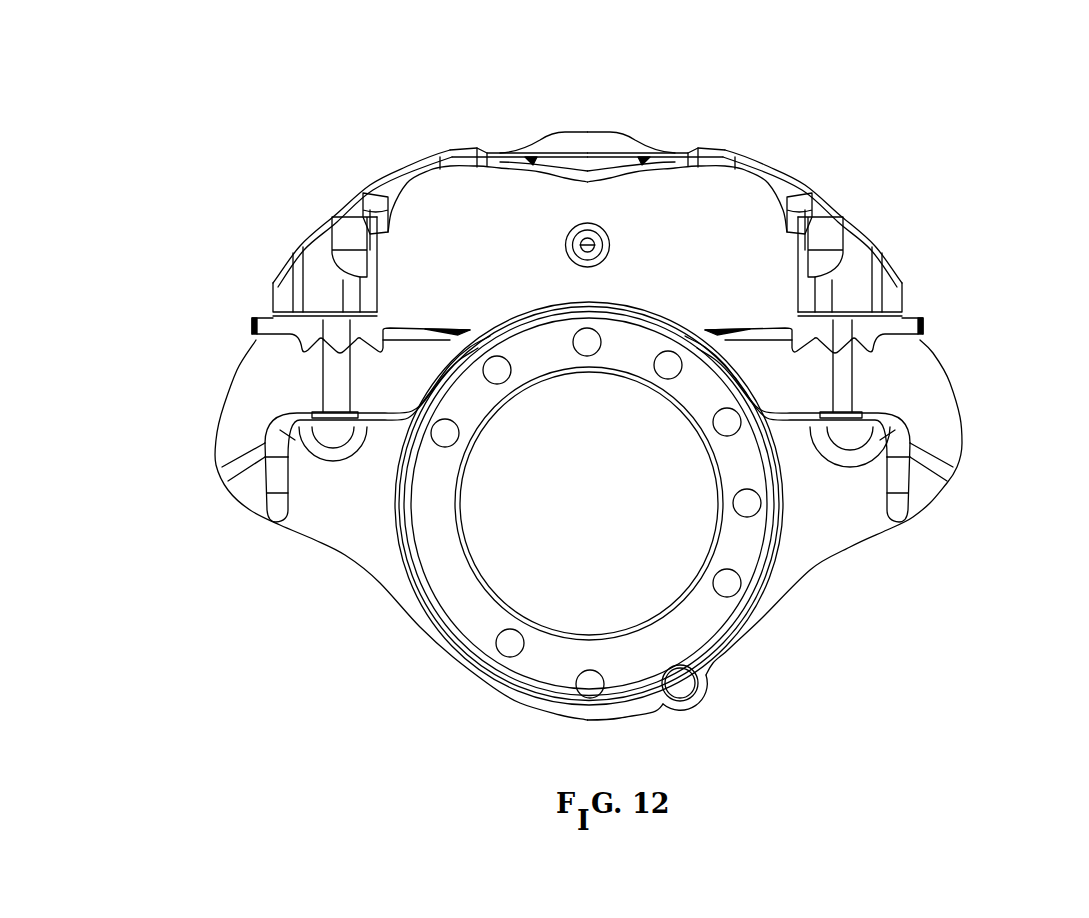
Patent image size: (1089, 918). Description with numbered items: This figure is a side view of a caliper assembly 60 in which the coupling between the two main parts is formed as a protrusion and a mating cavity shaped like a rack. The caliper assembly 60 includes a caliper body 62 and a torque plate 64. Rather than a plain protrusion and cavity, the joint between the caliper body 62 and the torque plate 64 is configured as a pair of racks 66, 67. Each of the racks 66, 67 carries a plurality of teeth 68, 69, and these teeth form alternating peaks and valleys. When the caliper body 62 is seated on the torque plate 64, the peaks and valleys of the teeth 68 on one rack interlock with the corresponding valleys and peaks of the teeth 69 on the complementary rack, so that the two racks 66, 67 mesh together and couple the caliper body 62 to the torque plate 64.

The caliper assembly 60 is at (570, 378).
The caliper body 62 is at (582, 242).
The torque plate 64 is at (933, 359).
The rack 66 is at (277, 313).
The rack 67 is at (315, 351).
The teeth 68 is at (362, 321).
The teeth 69 is at (356, 362).